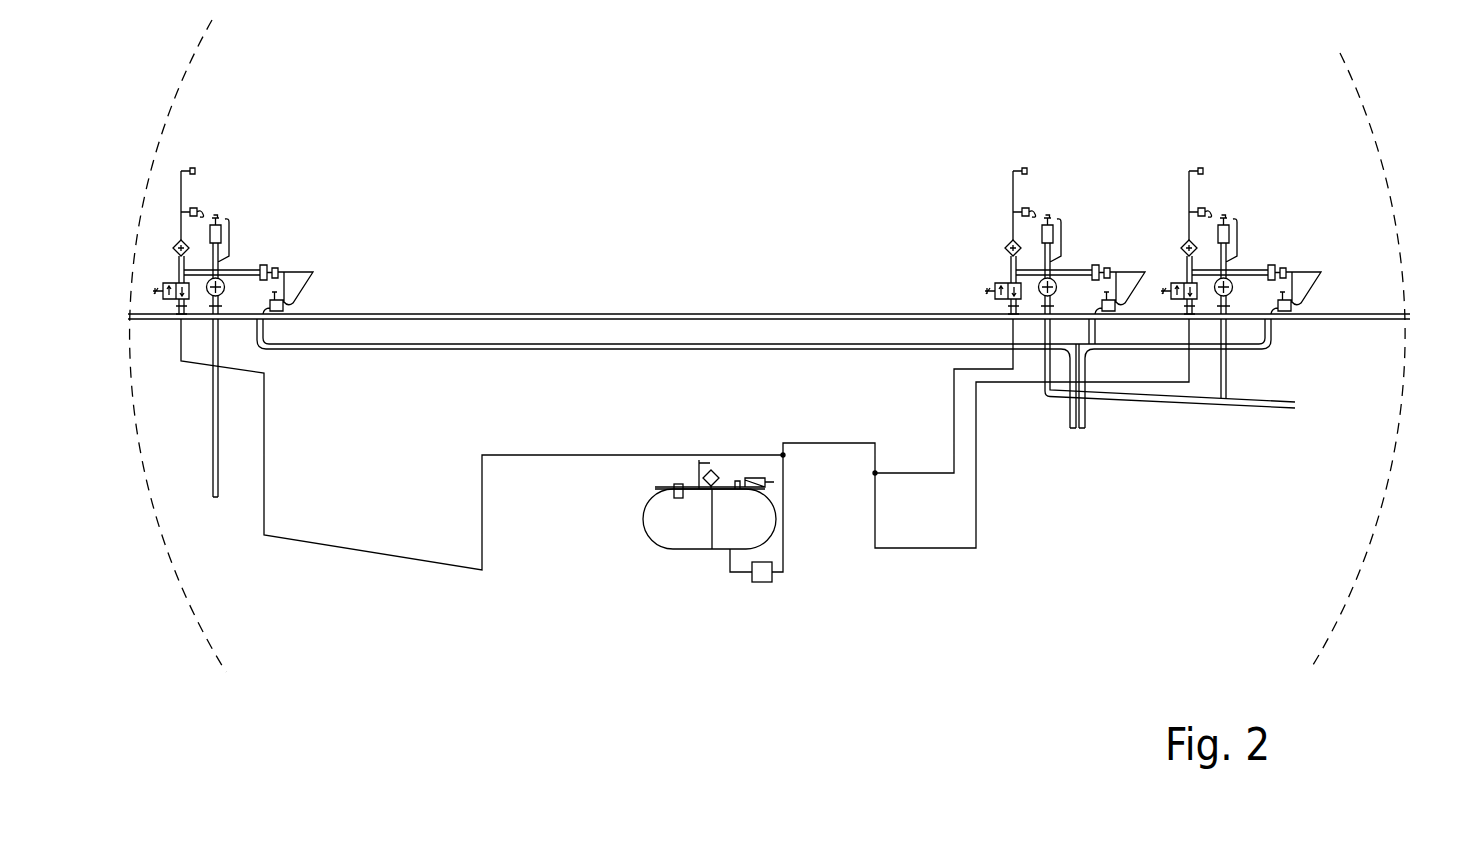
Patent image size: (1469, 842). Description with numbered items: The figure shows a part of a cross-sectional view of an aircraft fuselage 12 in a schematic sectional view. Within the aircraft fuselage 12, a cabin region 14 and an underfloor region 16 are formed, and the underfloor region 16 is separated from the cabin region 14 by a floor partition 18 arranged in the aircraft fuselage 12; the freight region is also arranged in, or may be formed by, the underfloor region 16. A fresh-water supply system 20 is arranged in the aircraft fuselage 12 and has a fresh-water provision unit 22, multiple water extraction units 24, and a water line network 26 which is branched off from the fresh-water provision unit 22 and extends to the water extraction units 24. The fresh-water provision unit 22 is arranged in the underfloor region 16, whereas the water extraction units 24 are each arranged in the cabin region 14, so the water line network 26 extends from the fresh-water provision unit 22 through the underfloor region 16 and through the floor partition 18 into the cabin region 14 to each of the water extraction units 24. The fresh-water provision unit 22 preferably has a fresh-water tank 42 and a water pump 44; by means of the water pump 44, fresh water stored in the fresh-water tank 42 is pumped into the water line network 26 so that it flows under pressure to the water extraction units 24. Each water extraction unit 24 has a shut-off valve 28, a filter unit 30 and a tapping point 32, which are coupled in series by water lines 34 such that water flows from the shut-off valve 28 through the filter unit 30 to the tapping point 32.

The aircraft fuselage 12 is at (176, 77).
The cabin region 14 is at (667, 198).
The underfloor region 16 is at (667, 413).
The floor partition 18 is at (727, 306).
The fresh-water supply system 20 is at (985, 566).
The fresh-water provision unit 22 is at (683, 563).
The water extraction unit 24 is at (248, 228).
The water line network 26 is at (532, 447).
The shut-off valve 28 is at (160, 278).
The filter unit 30 is at (170, 210).
The tapping point 32 is at (208, 185).
The water lines 34 is at (176, 245).
The fresh-water tank 42 is at (640, 542).
The water pump 44 is at (761, 585).